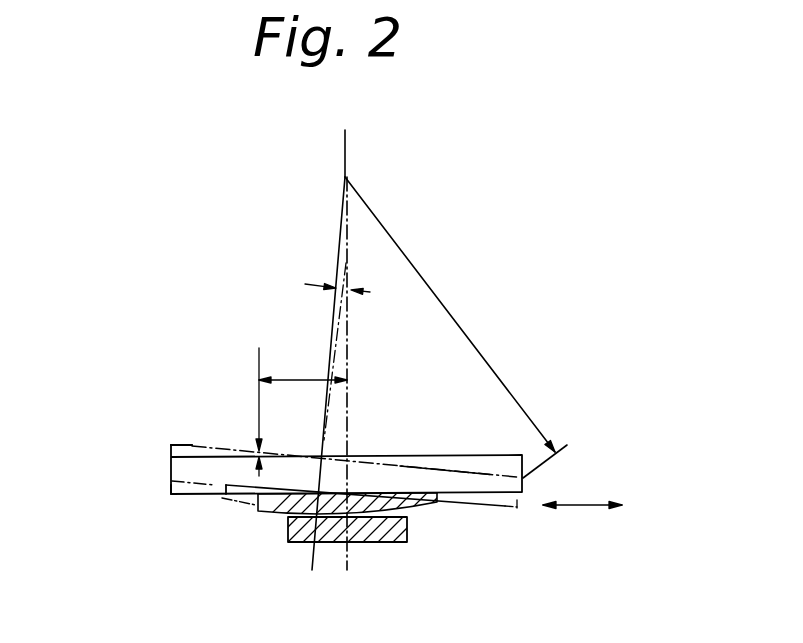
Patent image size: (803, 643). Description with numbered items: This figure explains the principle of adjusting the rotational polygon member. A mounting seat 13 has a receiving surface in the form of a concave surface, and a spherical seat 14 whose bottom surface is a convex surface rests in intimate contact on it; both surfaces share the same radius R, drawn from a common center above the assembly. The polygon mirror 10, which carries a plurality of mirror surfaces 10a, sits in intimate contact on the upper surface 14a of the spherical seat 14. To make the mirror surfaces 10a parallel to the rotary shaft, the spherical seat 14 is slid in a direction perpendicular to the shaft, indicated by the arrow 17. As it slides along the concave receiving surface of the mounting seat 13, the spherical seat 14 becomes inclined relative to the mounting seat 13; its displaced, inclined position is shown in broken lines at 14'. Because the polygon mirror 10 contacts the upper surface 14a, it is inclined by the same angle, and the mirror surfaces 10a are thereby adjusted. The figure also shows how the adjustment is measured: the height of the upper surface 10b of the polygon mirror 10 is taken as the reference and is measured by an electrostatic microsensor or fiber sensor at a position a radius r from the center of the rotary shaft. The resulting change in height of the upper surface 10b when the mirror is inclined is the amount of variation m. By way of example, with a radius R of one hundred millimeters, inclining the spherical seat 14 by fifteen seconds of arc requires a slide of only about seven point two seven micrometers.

The polygon mirror 10 is at (509, 457).
The mirror surfaces 10a is at (170, 490).
The upper surface of the polygon mirror 10b is at (193, 443).
The mounting seat 13 is at (397, 545).
The spherical seat 14 is at (365, 530).
The bonding layer in tilted position 14' is at (228, 534).
The upper surface of the spherical seat 14a is at (425, 497).
The arrow 17 is at (583, 508).
The radius R is at (476, 348).
The radius of measurement position r is at (303, 394).
The amount of variation m is at (255, 450).